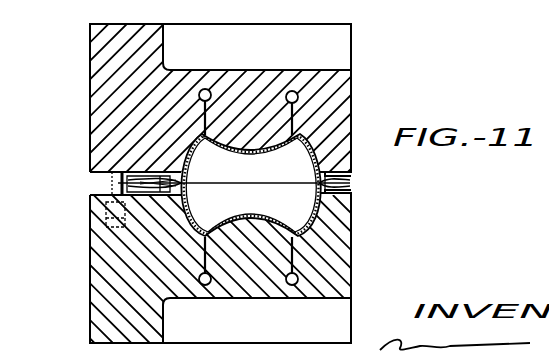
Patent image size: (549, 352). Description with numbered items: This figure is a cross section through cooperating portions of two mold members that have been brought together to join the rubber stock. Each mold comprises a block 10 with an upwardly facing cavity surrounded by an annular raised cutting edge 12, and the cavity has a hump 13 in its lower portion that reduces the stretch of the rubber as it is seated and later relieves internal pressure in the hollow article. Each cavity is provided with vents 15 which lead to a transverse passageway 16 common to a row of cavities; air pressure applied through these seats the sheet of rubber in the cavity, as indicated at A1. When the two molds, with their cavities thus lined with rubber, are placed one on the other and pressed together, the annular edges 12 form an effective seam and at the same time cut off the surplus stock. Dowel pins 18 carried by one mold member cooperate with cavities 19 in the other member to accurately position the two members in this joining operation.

The block 10 is at (100, 107).
The annular raised cutting edge 12 is at (183, 186).
The hump 13 is at (227, 145).
The vent 15 is at (298, 109).
The transverse passageway 16 is at (209, 80).
The dowel pin 18 is at (118, 182).
The cavity 19 is at (106, 223).
The seated rubber sheet A1 is at (310, 150).